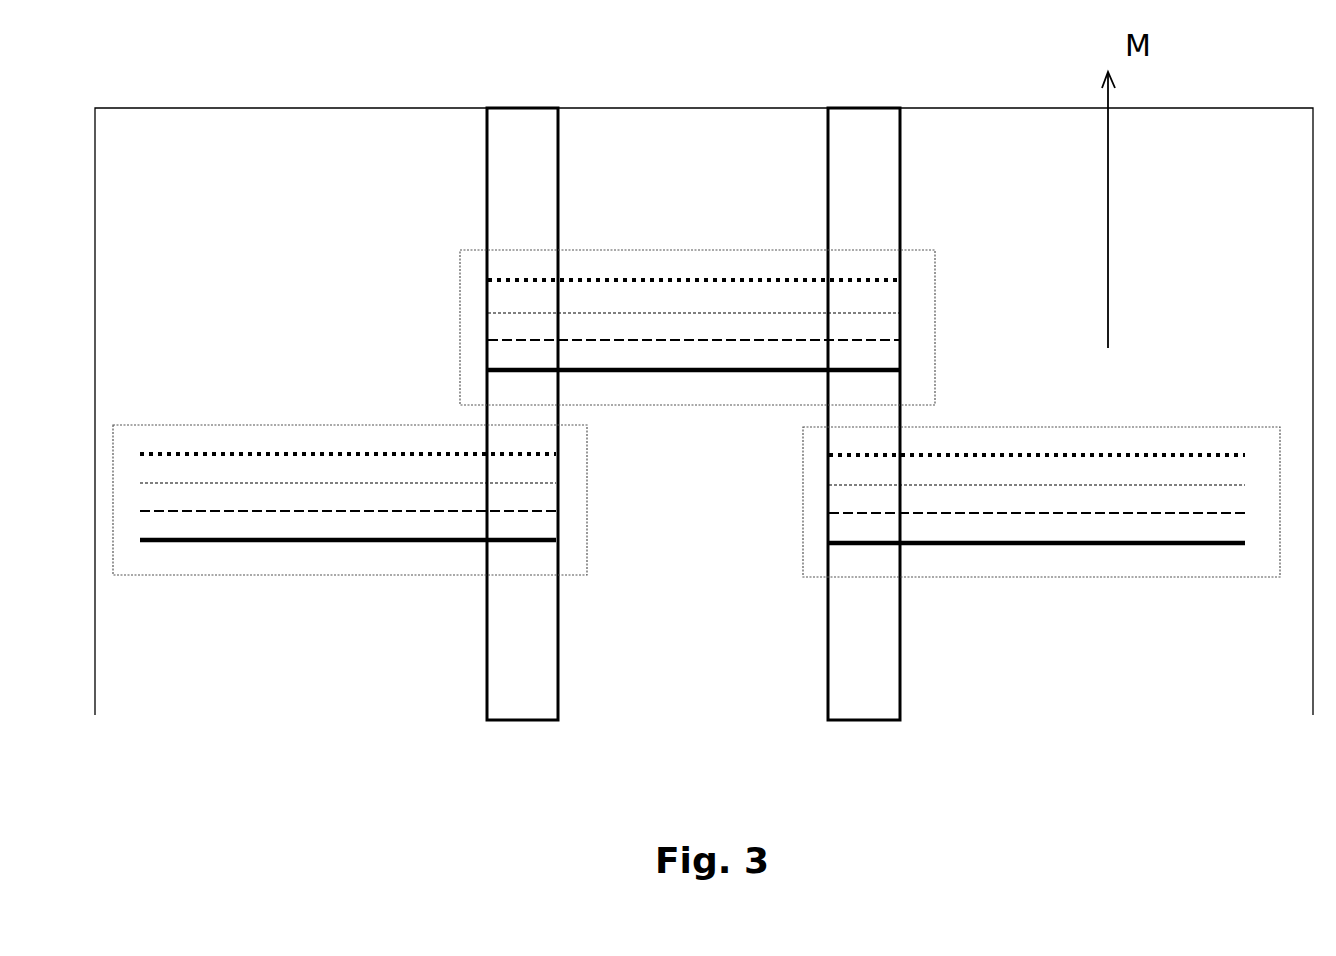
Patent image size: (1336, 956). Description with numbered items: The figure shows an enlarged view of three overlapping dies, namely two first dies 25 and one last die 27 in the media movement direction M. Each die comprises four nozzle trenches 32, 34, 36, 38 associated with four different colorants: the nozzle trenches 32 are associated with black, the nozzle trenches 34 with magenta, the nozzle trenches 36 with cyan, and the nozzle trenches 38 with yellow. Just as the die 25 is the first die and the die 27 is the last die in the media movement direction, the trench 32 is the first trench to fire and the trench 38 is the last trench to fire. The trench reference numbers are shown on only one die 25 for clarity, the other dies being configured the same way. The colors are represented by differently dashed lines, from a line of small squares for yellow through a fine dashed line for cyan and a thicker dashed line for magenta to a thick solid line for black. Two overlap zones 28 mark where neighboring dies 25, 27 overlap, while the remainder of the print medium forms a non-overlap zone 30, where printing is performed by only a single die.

The first die 25 is at (303, 563).
The last die 27 is at (653, 267).
The overlap zone 28 is at (530, 140).
The non-overlap zone 30 is at (222, 199).
The nozzle trench 32 is at (430, 532).
The nozzle trench 34 is at (338, 505).
The nozzle trench 36 is at (277, 482).
The nozzle trench 38 is at (188, 447).